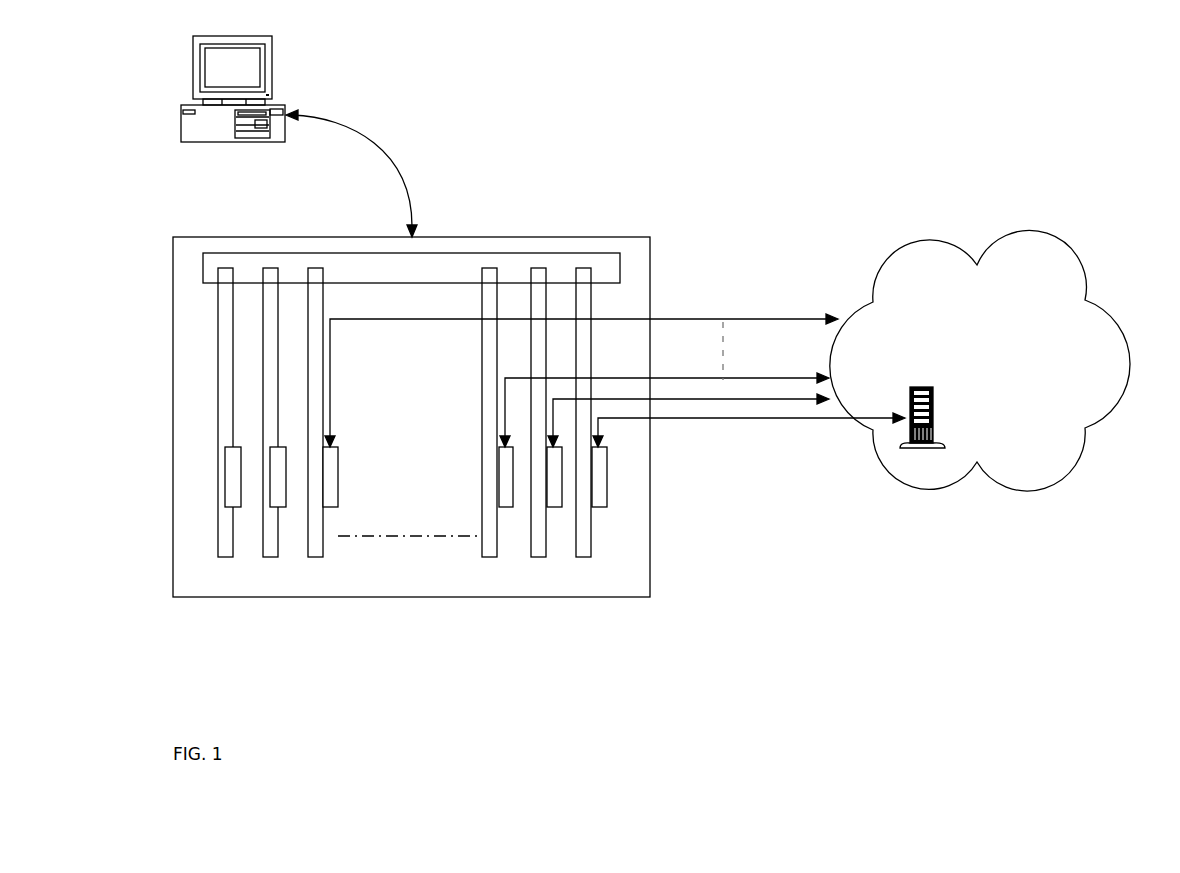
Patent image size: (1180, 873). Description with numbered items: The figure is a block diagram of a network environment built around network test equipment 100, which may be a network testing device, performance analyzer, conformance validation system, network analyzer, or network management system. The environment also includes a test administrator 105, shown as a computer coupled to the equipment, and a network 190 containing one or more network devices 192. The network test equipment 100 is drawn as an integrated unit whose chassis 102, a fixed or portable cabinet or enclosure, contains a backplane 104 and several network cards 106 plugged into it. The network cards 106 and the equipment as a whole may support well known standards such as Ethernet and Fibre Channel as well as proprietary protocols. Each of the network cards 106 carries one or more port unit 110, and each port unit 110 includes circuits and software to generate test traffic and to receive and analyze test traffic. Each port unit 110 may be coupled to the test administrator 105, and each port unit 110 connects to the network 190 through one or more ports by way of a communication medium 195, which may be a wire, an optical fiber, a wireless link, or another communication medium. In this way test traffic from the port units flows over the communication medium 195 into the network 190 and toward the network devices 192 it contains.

The network test equipment 100 is at (475, 353).
The chassis 102 is at (517, 237).
The backplane 104 is at (575, 253).
The test administrator 105 is at (228, 112).
The network cards 106 is at (602, 612).
The port unit 110 is at (593, 507).
The network 190 is at (980, 360).
The network device 192 is at (933, 418).
The communication medium 195 is at (708, 418).